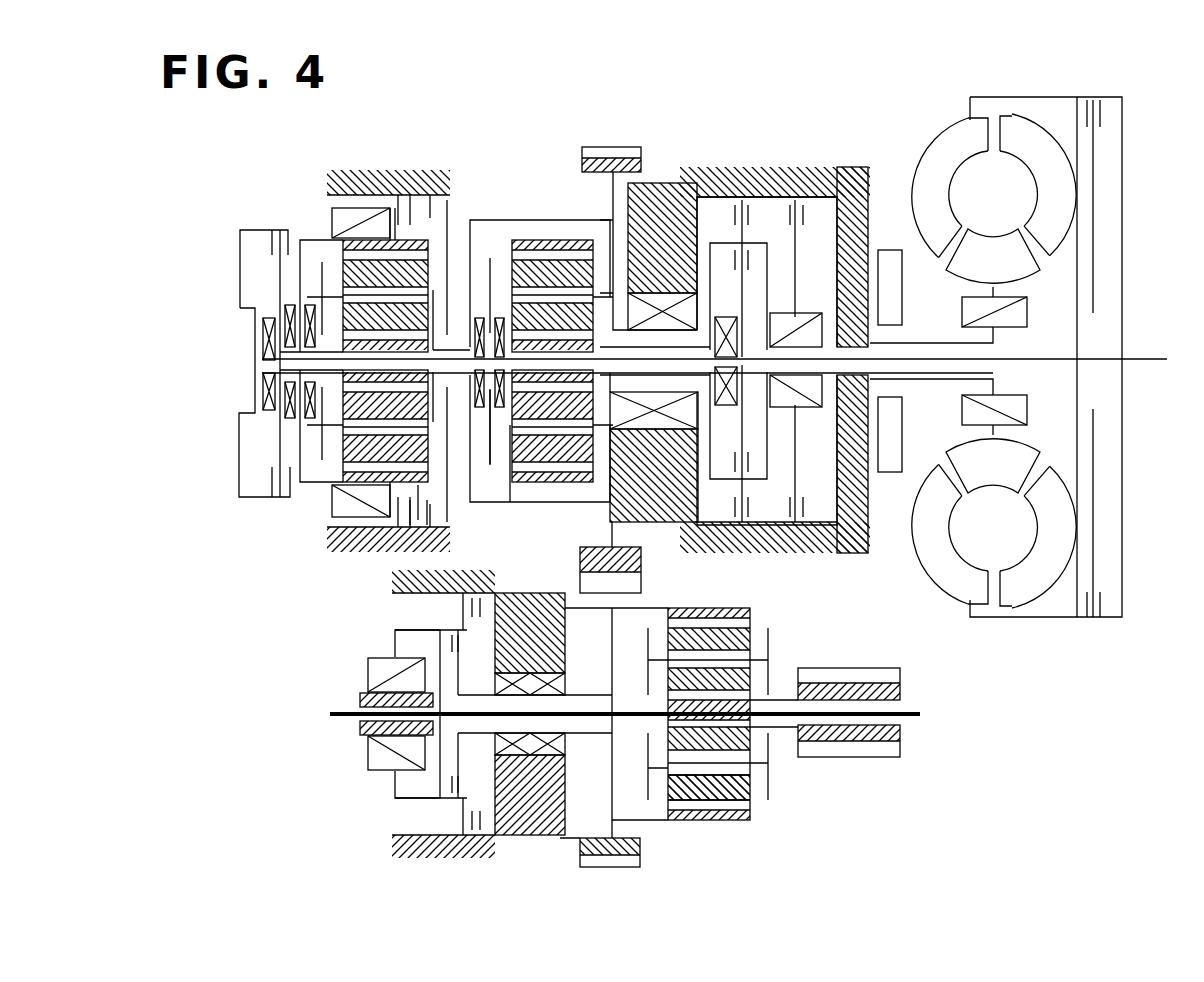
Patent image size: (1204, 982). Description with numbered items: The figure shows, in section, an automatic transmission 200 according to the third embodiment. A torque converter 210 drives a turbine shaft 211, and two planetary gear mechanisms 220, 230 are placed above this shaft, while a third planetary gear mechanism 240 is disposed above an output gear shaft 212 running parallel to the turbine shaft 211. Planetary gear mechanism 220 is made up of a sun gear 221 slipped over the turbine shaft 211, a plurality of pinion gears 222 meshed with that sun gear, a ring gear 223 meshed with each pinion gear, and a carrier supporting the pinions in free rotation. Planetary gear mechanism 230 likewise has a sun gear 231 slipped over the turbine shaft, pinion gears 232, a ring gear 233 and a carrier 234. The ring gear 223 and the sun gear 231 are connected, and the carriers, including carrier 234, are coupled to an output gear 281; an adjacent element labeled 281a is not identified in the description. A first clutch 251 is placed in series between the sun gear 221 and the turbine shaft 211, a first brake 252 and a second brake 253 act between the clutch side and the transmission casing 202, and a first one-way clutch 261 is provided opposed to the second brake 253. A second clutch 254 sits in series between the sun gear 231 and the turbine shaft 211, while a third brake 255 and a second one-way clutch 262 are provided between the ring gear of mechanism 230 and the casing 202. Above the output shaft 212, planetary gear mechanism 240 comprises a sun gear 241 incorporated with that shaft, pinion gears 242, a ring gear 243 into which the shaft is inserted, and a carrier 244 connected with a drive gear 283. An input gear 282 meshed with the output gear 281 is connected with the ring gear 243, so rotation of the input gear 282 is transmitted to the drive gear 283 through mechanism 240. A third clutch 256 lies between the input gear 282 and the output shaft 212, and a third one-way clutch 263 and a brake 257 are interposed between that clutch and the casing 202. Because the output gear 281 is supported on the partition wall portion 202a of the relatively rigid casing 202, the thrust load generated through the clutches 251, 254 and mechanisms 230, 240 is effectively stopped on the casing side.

The automatic transmission 200 is at (330, 172).
The transmission casing 202 is at (853, 215).
The partition wall portion 202a is at (652, 268).
The torque converter 210 is at (940, 128).
The turbine shaft 211 is at (1122, 397).
The output gear shaft 212 is at (920, 715).
The planetary gear mechanism 220 is at (576, 238).
The sun gear 221 is at (547, 248).
The pinion gears 222 is at (500, 465).
The ring gear 223 is at (522, 455).
The planetary gear mechanism 230 is at (441, 182).
The sun gear 231 is at (348, 322).
The pinion gears 232 is at (400, 262).
The ring gear 233 is at (340, 492).
The carrier 234 is at (440, 226).
The planetary gear mechanism 240 is at (730, 822).
The sun gear 241 is at (752, 677).
The pinion gears 242 is at (748, 783).
The ring gear 243 is at (737, 608).
The carrier 244 is at (773, 745).
The first clutch 251 is at (721, 265).
The first brake 252 is at (767, 212).
The second brake 253 is at (810, 210).
The second clutch 254 is at (272, 243).
The third brake 255 is at (392, 527).
The third clutch 256 is at (407, 786).
The brake 257 is at (462, 607).
The first one-way clutch 261 is at (805, 405).
The second one-way clutch 262 is at (335, 225).
The third one-way clutch 263 is at (375, 673).
The output gear 281 is at (608, 147).
The transfer gear 281a is at (665, 425).
The input gear 282 is at (640, 843).
The drive gear 283 is at (878, 670).